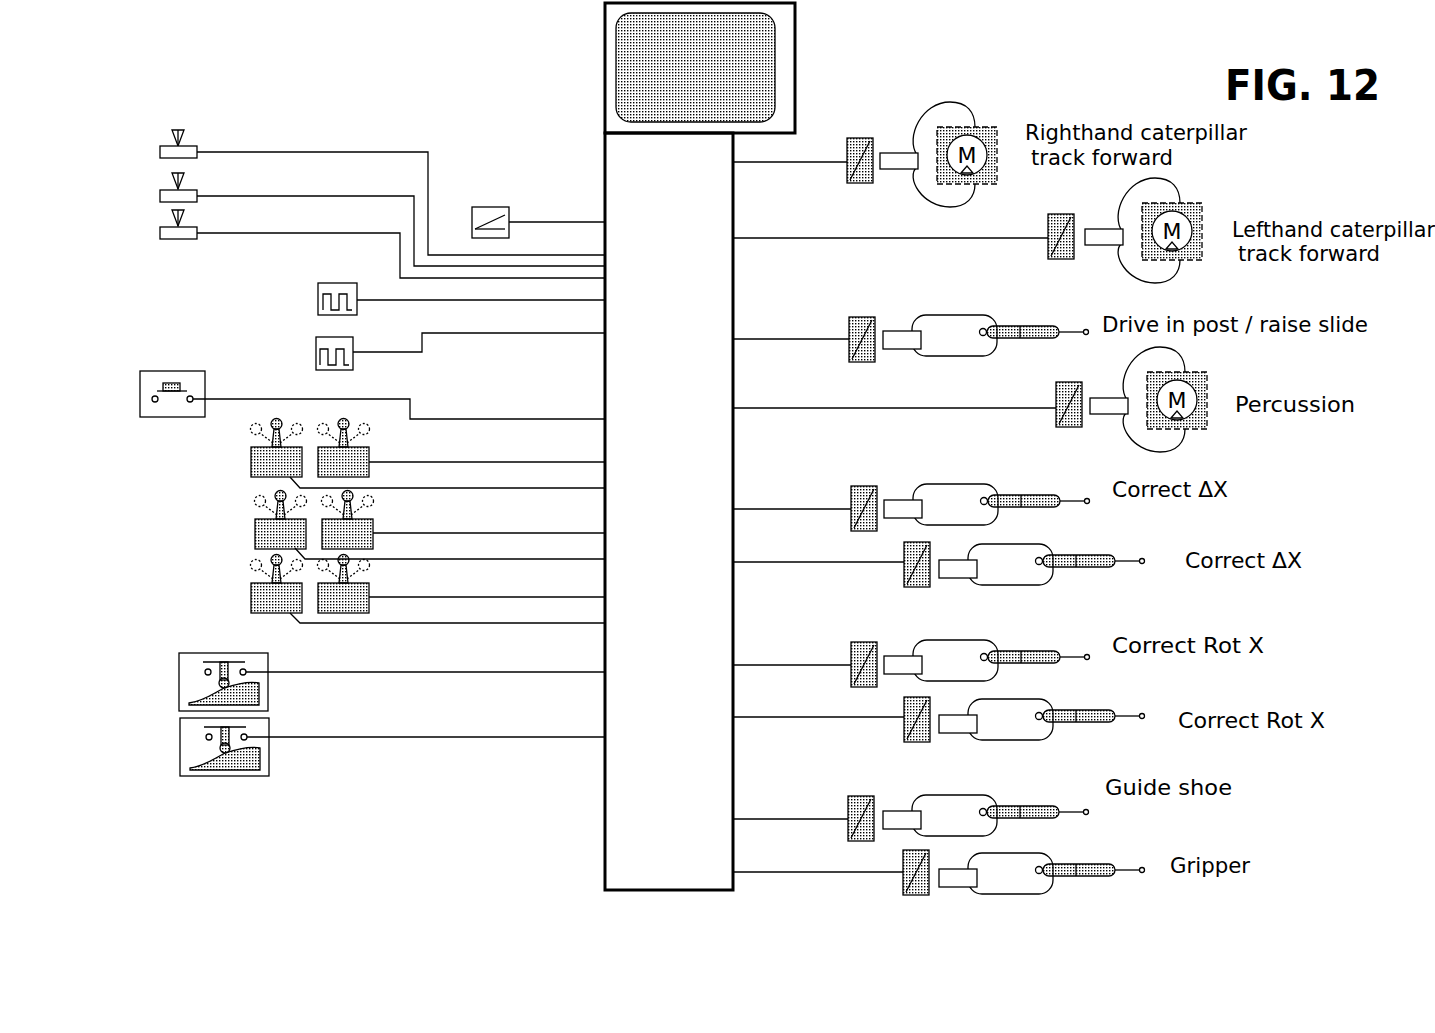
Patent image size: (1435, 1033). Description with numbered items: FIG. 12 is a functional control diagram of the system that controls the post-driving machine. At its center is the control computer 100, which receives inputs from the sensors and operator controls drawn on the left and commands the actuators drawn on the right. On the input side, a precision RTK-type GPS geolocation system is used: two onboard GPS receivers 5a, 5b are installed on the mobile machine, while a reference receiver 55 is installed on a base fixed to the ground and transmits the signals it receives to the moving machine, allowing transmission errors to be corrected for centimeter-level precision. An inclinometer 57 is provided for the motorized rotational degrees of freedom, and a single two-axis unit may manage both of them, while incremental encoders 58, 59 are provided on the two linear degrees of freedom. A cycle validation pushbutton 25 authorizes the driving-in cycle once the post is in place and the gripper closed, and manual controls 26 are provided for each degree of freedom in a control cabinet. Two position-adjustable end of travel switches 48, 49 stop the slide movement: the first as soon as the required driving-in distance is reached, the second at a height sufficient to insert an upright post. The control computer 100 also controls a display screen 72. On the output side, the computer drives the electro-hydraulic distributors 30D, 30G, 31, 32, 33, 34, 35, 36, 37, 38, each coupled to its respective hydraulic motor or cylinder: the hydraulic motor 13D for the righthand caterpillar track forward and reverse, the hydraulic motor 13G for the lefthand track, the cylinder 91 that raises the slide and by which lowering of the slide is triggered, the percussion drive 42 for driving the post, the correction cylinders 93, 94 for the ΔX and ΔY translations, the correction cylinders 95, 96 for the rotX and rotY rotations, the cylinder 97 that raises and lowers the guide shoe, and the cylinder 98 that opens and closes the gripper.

The control computer 100 is at (692, 523).
The display screen 72 is at (710, 81).
The reference receiver 55 is at (368, 185).
The GPS receiver 5a is at (363, 219).
The GPS receiver 5b is at (363, 244).
The inclinometer 57 is at (492, 207).
The incremental encoder 58 is at (318, 297).
The incremental encoder 59 is at (316, 352).
The cycle validation pushbutton 25 is at (158, 371).
The manual controls 26 is at (230, 423).
The end of travel switch 48 is at (179, 668).
The end of travel switch 49 is at (180, 739).
The electro-hydraulic distributor 30D is at (859, 137).
The hydraulic motor 13D is at (997, 138).
The electro-hydraulic distributor 30G is at (903, 234).
The hydraulic motor 13G is at (1202, 213).
The electro-hydraulic distributor 31 is at (804, 336).
The cylinder 91 is at (1010, 326).
The electro-hydraulic distributor 32 is at (907, 401).
The percussion motor 42 is at (1207, 388).
The electro-hydraulic distributor 33 is at (805, 506).
The correction cylinder 93 is at (1010, 495).
The electro-hydraulic distributor 34 is at (831, 567).
The correction cylinder 94 is at (1100, 556).
The electro-hydraulic distributor 35 is at (805, 661).
The correction cylinder 95 is at (1010, 651).
The electro-hydraulic distributor 36 is at (831, 724).
The correction cylinder 96 is at (1100, 710).
The electro-hydraulic distributor 37 is at (803, 816).
The guide shoe cylinder 97 is at (1010, 806).
The electro-hydraulic distributor 38 is at (831, 878).
The gripper cylinder 98 is at (1100, 863).